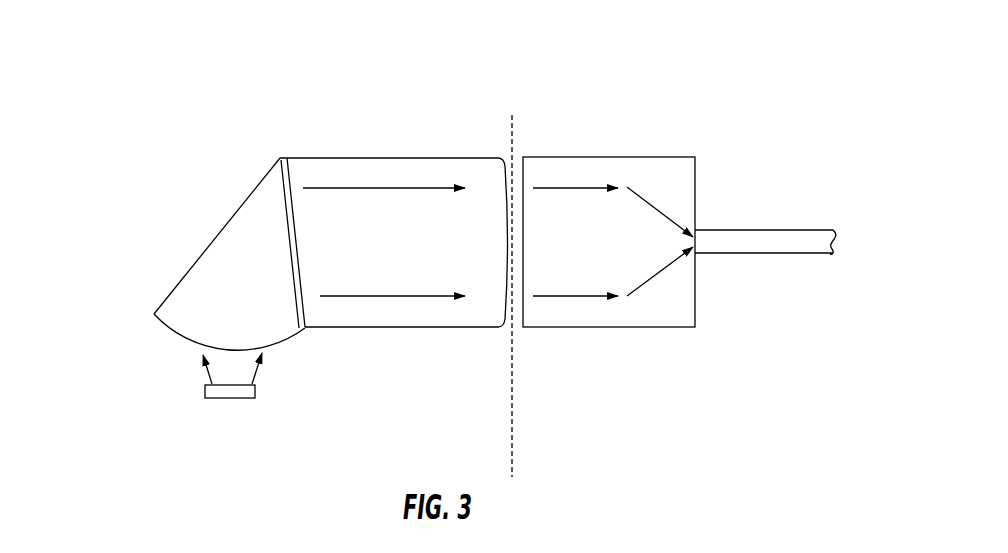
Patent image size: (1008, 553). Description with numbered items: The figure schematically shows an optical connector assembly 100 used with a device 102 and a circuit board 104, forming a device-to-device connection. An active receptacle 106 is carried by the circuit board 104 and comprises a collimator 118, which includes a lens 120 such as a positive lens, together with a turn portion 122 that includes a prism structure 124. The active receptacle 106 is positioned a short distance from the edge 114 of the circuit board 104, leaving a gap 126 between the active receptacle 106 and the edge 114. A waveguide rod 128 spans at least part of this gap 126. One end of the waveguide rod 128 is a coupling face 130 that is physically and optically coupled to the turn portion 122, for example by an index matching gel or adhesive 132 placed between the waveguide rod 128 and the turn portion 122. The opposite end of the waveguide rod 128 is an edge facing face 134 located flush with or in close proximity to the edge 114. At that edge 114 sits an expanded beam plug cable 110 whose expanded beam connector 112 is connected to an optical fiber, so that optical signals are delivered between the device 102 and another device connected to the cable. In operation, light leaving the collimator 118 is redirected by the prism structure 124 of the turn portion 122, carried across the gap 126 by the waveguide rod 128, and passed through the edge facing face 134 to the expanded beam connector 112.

The optical connector assembly 100 is at (233, 97).
The device 102 is at (433, 72).
The circuit board 104 is at (492, 440).
The active receptacle 106 is at (142, 317).
The expanded beam plug cable 110 is at (768, 175).
The expanded beam connector 112 is at (652, 167).
The edge 114 is at (780, 247).
The collimator 118 is at (147, 292).
The lens 120 is at (178, 338).
The turn portion 122 is at (238, 193).
The prism structure 124 is at (235, 238).
The gap 126 is at (390, 398).
The waveguide rod 128 is at (370, 173).
The coupling face 130 is at (283, 180).
The index matching gel or adhesive 132 is at (300, 317).
The edge facing face 134 is at (512, 180).